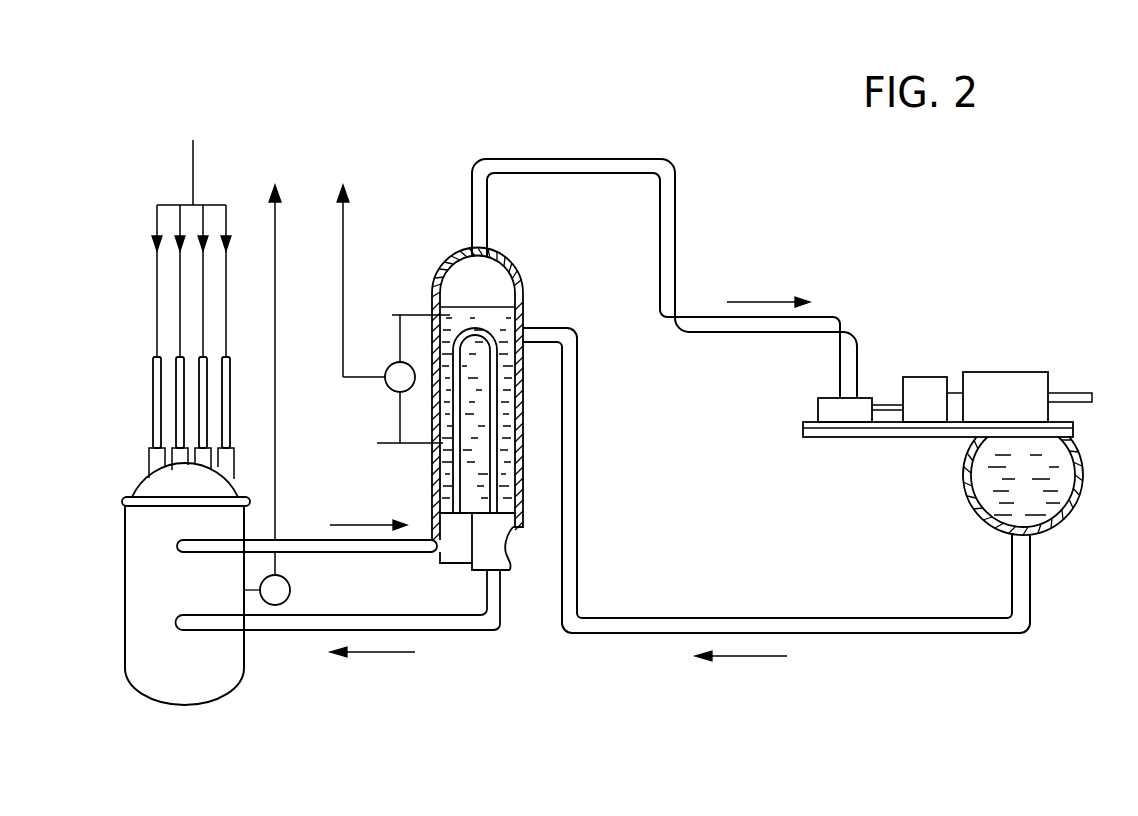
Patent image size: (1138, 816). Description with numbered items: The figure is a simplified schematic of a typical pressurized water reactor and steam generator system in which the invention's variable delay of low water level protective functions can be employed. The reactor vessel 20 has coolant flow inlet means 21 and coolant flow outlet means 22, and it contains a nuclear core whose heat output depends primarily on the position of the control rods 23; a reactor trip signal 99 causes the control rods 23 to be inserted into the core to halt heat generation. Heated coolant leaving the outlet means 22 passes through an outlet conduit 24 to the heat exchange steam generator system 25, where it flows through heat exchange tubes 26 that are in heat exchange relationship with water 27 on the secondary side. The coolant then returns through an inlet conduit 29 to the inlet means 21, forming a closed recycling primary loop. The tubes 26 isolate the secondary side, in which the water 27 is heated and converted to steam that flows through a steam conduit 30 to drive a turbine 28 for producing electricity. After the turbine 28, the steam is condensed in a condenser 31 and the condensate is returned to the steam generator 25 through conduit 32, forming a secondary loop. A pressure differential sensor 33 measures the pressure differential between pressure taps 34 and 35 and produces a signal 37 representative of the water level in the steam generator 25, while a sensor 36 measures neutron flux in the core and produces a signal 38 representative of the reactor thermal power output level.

The reactor vessel 20 is at (125, 666).
The coolant flow inlet means 21 is at (180, 615).
The coolant flow outlet means 22 is at (177, 538).
The control rods 23 is at (111, 337).
The outlet conduit 24 is at (298, 537).
The heat exchange steam generator system 25 is at (438, 266).
The heat exchange tubes 26 is at (523, 312).
The water 27 is at (492, 307).
The turbine 28 is at (987, 372).
The inlet conduit 29 is at (446, 615).
The steam conduit 30 is at (676, 195).
The condenser 31 is at (1084, 458).
The conduit 32 is at (969, 618).
The pressure differential sensor 33 is at (390, 391).
The pressure tap 34 is at (394, 315).
The pressure tap 35 is at (380, 443).
The sensor 36 is at (290, 585).
The signal 37 is at (344, 211).
The signal 38 is at (276, 218).
The reactor trip signal 99 is at (194, 152).